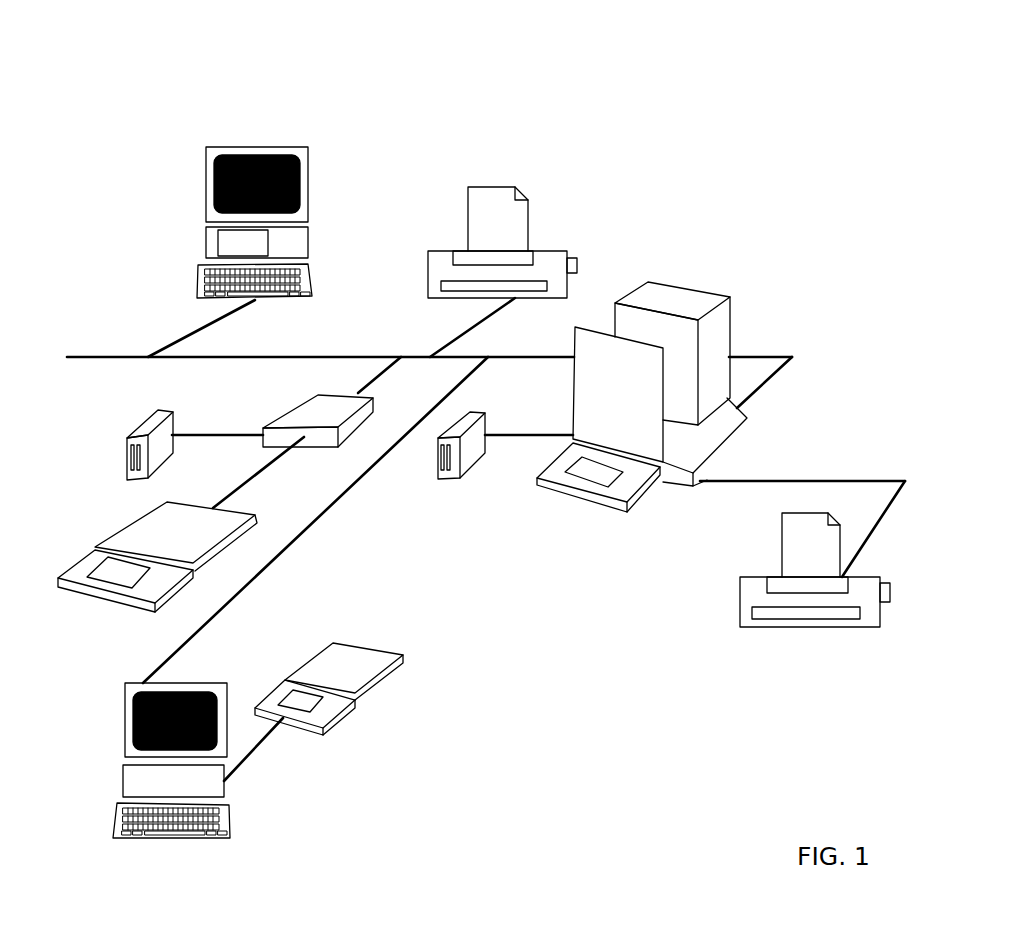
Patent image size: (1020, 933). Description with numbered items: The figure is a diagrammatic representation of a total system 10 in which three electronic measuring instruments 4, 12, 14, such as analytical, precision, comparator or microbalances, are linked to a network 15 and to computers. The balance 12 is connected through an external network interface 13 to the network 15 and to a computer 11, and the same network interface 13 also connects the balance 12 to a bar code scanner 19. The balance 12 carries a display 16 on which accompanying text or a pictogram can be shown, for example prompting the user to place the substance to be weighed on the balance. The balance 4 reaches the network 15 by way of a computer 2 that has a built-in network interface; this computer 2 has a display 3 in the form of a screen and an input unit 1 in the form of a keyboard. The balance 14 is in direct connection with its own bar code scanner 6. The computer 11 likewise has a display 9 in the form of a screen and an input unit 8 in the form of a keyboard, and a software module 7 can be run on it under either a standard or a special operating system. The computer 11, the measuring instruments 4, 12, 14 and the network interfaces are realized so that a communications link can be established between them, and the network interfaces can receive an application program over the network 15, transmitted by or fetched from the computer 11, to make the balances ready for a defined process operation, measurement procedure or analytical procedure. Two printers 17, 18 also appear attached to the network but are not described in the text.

The input unit 1 is at (118, 831).
The computer 2 is at (130, 777).
The display 3 is at (135, 718).
The electronic measuring instrument 4 is at (317, 677).
The bar code scanner 6 is at (483, 422).
The software module 7 is at (255, 221).
The input unit 8 is at (303, 277).
The display 9 is at (297, 182).
The total system 10 is at (646, 88).
The computer 11 is at (292, 242).
The electronic measuring instrument 12 is at (176, 565).
The external network interface 13 is at (357, 433).
The electronic measuring instrument 14 is at (720, 467).
The network 15 is at (705, 397).
The display 16 is at (120, 573).
The printer 17 is at (567, 262).
The printer 18 is at (748, 598).
The bar code scanner 19 is at (170, 422).